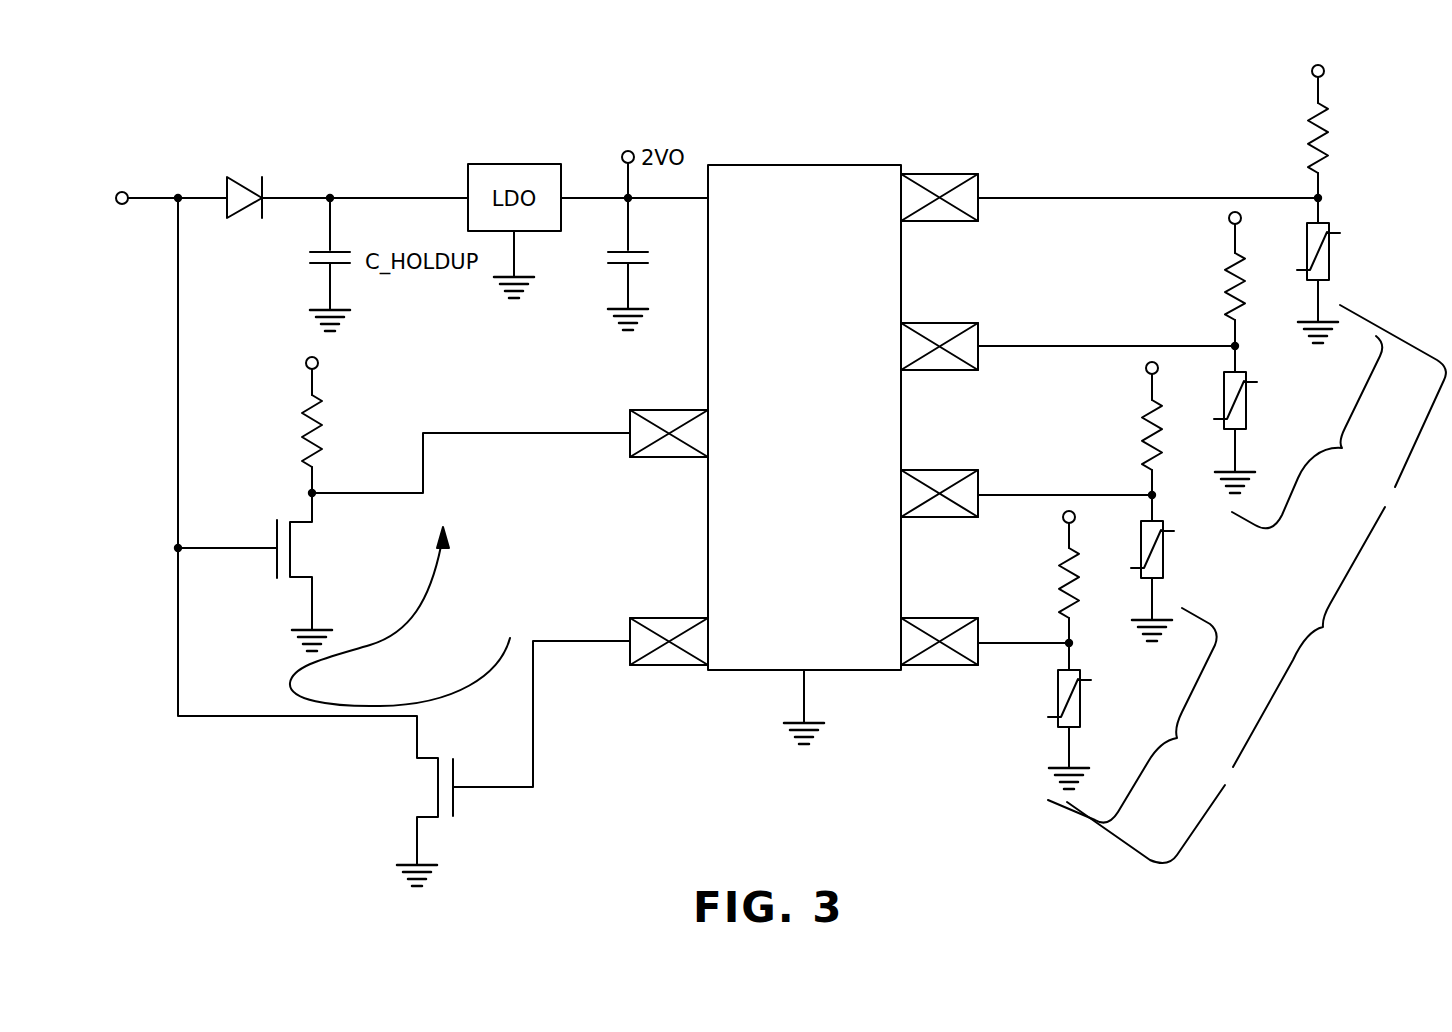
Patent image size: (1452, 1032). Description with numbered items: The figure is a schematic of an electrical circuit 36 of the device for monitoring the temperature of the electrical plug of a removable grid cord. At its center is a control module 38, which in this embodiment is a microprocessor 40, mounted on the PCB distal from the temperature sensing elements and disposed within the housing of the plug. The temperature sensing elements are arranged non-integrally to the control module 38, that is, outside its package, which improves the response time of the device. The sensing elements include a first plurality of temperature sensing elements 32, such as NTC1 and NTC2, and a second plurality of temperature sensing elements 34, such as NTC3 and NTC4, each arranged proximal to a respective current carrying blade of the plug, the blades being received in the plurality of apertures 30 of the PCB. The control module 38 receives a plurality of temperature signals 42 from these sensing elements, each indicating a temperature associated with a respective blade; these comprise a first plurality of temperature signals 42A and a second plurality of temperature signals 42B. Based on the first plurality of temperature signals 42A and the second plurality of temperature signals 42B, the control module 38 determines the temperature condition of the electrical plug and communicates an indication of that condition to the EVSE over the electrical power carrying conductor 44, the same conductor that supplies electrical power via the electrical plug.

The plurality of apertures 30 is at (1323, 627).
The first plurality of temperature sensing elements 32 is at (1177, 738).
The second plurality of temperature sensing elements 34 is at (1342, 448).
The electrical circuit 36 is at (128, 127).
The control module 38 is at (767, 165).
The microprocessor 40 is at (864, 165).
The plurality of temperature signals 42 is at (1052, 643).
The first plurality of temperature signals 42A is at (1015, 495).
The second plurality of temperature signals 42B is at (1145, 346).
The electrical power carrying conductor 44 is at (158, 198).